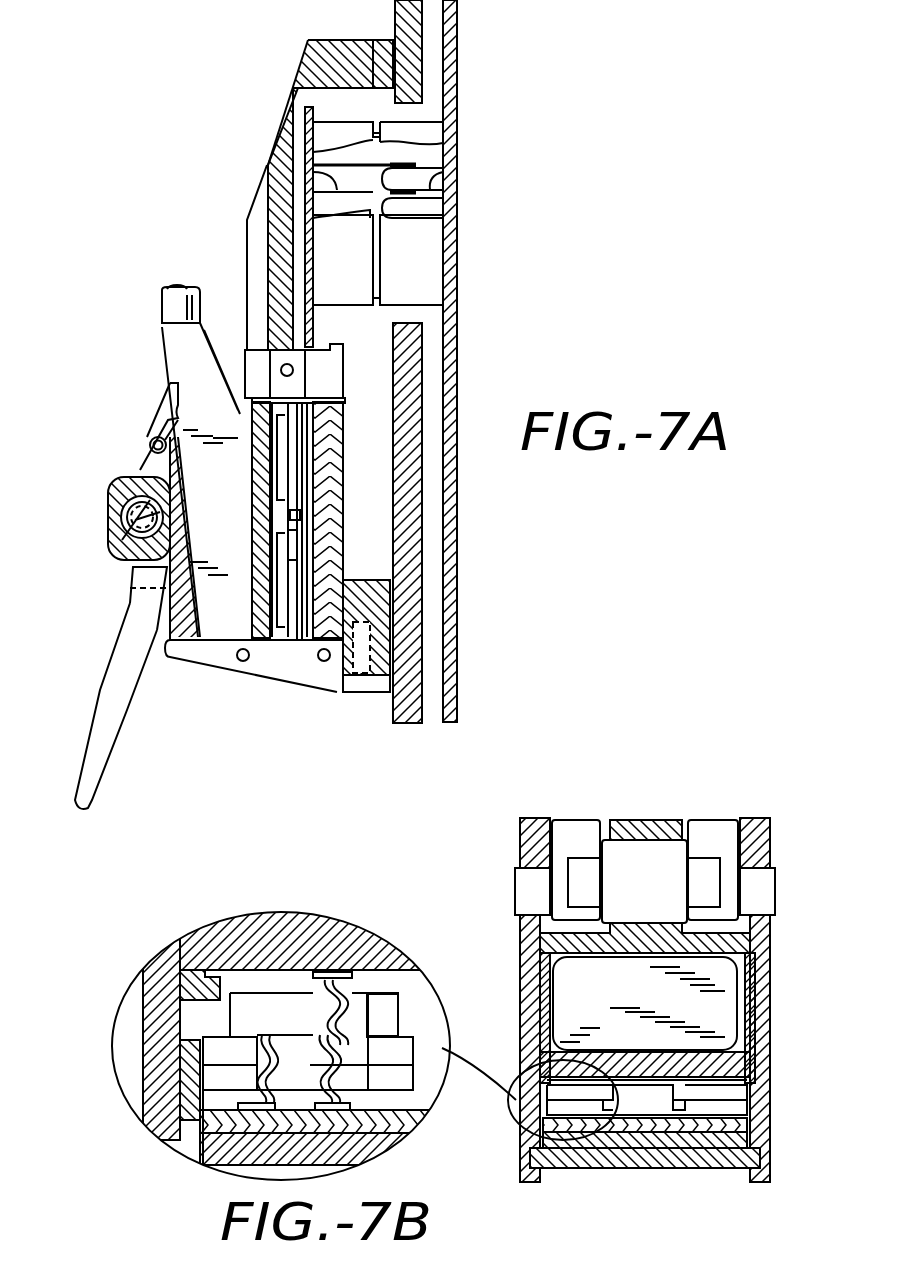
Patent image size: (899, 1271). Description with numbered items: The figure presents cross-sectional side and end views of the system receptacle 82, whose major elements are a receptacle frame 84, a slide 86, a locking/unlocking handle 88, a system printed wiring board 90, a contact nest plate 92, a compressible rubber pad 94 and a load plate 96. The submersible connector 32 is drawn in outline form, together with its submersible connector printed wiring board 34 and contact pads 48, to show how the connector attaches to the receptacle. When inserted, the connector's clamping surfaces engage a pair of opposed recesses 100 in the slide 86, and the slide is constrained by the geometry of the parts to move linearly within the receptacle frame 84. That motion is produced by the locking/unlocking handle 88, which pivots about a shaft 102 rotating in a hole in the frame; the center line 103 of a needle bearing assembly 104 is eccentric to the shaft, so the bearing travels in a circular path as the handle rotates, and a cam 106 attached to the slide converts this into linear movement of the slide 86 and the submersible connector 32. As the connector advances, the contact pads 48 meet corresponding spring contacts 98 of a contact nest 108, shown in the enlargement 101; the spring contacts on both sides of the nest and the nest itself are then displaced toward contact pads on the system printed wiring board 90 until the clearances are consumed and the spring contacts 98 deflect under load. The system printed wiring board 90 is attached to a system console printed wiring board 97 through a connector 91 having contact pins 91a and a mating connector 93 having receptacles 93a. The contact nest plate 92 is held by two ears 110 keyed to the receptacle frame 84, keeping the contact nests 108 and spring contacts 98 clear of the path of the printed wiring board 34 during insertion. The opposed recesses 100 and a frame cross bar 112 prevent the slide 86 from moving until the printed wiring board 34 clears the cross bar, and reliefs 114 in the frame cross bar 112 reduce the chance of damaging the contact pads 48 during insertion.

In FIG. 7A, the submersible connector 32 is at (217, 463).
In FIG. 7B, the submersible connector 32 is at (723, 1000).
In FIG. 7A, the submersible connector printed wiring board 34 is at (243, 662).
In FIG. 7B, the submersible connector printed wiring board 34 is at (300, 935).
In FIG. 7A, the contact pads 48 is at (273, 493).
In FIG. 7B, the contact pads 48 is at (350, 990).
In FIG. 7A, the system receptacle 82 is at (126, 820).
In FIG. 7B, the system receptacle 82 is at (809, 850).
In FIG. 7A, the receptacle frame 84 is at (268, 667).
In FIG. 7B, the receptacle frame 84 is at (150, 1040).
In FIG. 7A, the slide 86 is at (170, 587).
In FIG. 7B, the slide 86 is at (190, 987).
In FIG. 7A, the locking/unlocking handle 88 is at (118, 672).
In FIG. 7B, the locking/unlocking handle 88 is at (718, 840).
In FIG. 7A, the system printed wiring board 90 is at (305, 118).
In FIG. 7B, the system printed wiring board 90 is at (220, 1118).
In FIG. 7A, the connector 91 is at (337, 120).
In FIG. 7A, the contact pins 91a is at (340, 163).
In FIG. 7A, the contact nest plate 92 is at (312, 513).
In FIG. 7B, the contact nest plate 92 is at (423, 1033).
In FIG. 7A, the mating connector 93 is at (387, 122).
In FIG. 7A, the receptacles 93a is at (445, 175).
In FIG. 7A, the compressible rubber pad 94 is at (315, 560).
In FIG. 7B, the compressible rubber pad 94 is at (257, 1157).
In FIG. 7A, the load plate 96 is at (322, 663).
In FIG. 7B, the load plate 96 is at (640, 1160).
In FIG. 7A, the system console printed wiring board 97 is at (457, 100).
In FIG. 7A, the spring contacts 98 is at (282, 485).
In FIG. 7B, the spring contacts 98 is at (262, 988).
In FIG. 7B, the opposed recesses 100 is at (180, 945).
In FIG. 7B, the enlargement 101 is at (377, 1140).
In FIG. 7A, the shaft 102 is at (128, 472).
In FIG. 7B, the shaft 102 is at (515, 890).
In FIG. 7A, the center line 103 is at (128, 515).
In FIG. 7A, the needle bearing assembly 104 is at (110, 492).
In FIG. 7B, the needle bearing assembly 104 is at (645, 877).
In FIG. 7A, the cam 106 is at (147, 432).
In FIG. 7A, the contact nest 108 is at (312, 520).
In FIG. 7B, the contact nest 108 is at (402, 1012).
In FIG. 7A, the ears 110 is at (292, 640).
In FIG. 7A, the frame cross bar 112 is at (243, 343).
In FIG. 7A, the reliefs 114 is at (260, 350).